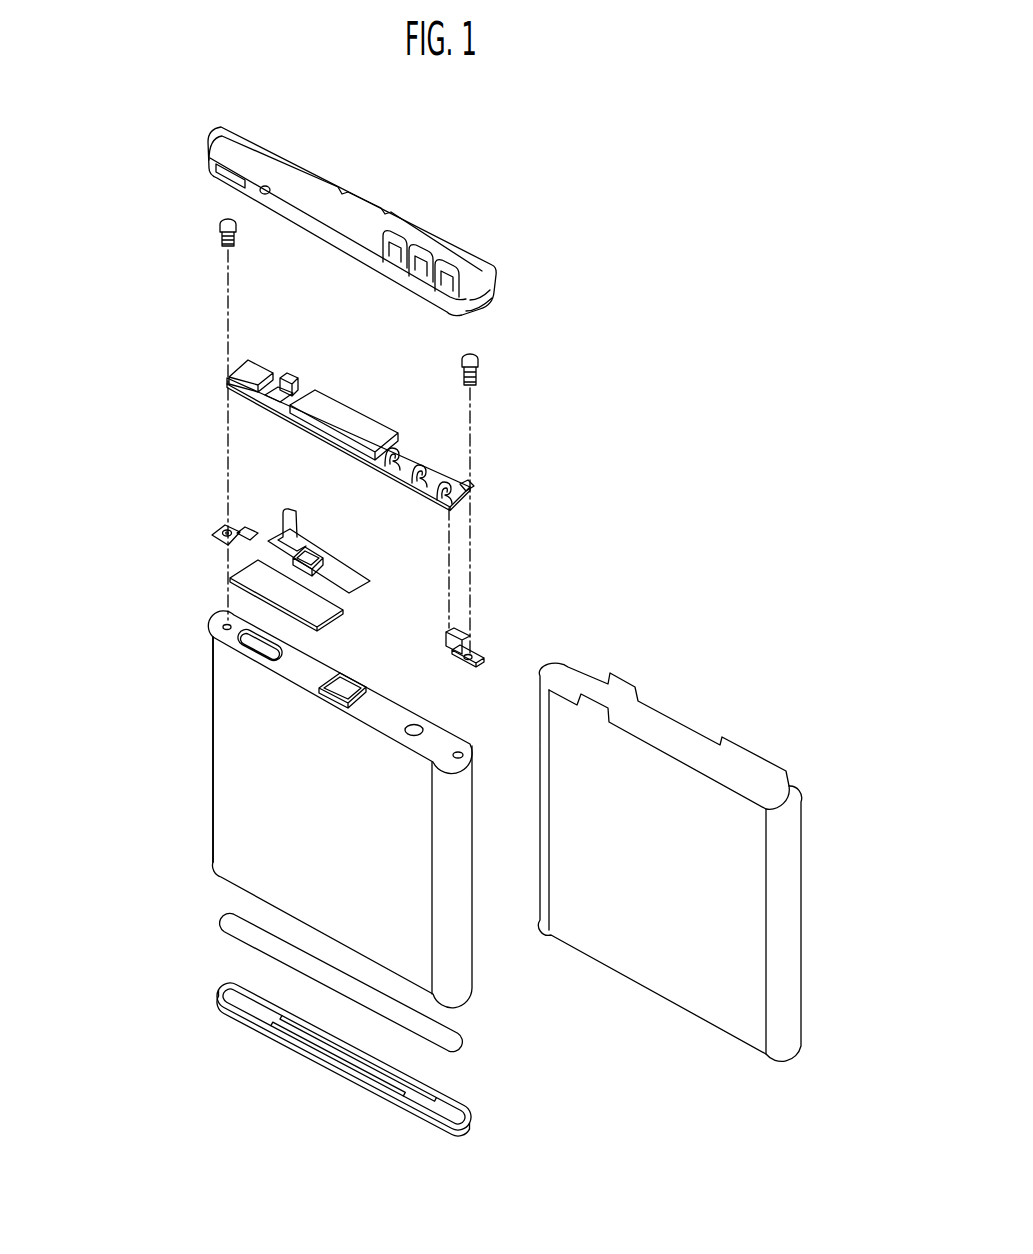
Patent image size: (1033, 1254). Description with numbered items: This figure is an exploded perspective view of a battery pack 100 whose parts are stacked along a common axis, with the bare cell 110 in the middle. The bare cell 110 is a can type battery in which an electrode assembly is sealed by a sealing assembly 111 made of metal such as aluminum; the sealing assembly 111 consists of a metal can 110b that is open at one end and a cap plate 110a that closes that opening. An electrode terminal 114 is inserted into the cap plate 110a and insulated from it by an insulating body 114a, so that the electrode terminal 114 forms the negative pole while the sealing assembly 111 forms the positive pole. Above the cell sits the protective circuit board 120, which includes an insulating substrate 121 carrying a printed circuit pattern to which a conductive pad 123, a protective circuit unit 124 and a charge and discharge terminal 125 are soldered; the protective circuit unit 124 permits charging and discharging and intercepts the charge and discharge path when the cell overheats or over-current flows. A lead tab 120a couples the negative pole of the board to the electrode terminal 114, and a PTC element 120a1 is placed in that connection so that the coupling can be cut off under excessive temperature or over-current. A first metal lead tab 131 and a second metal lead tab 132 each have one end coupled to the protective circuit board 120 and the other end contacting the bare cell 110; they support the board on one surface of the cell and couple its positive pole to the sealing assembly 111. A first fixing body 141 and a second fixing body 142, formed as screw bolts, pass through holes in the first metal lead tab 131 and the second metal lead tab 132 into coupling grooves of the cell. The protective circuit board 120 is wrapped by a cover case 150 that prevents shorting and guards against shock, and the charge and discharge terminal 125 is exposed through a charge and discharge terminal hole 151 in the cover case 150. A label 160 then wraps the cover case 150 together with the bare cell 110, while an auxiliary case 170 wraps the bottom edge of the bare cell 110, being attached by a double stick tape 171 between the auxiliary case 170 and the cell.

The battery pack 100 is at (560, 128).
The bare cell 110 is at (287, 809).
The cap plate 110a is at (228, 640).
The metal can 110b is at (222, 712).
The sealing assembly 111 is at (137, 662).
The electrode terminal 114 is at (368, 670).
The insulating body 114a is at (366, 691).
The protective circuit board 120 is at (340, 392).
The lead tab 120a is at (330, 563).
The PTC element 120a1 is at (318, 556).
The insulating substrate 121 is at (470, 484).
The conductive pad 123 is at (292, 375).
The protective circuit unit 124 is at (254, 370).
The charge and discharge terminal 125 is at (452, 482).
The first metal lead tab 131 is at (434, 626).
The second metal lead tab 132 is at (215, 521).
The first fixing body 141 is at (488, 352).
The second fixing body 142 is at (214, 212).
The cover case 150 is at (298, 150).
The charge and discharge terminal hole 151 is at (452, 272).
The label 160 is at (700, 730).
The auxiliary case 170 is at (205, 1004).
The double stick tape 171 is at (234, 926).